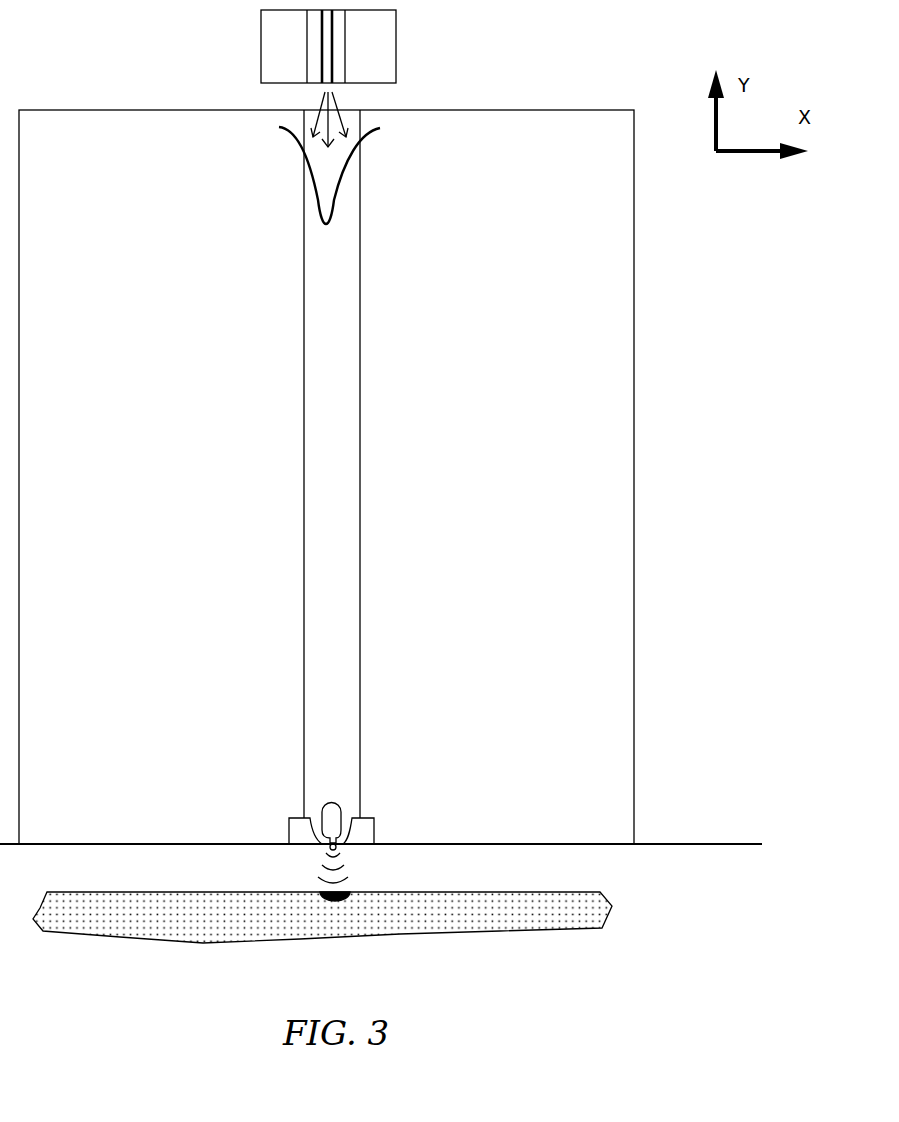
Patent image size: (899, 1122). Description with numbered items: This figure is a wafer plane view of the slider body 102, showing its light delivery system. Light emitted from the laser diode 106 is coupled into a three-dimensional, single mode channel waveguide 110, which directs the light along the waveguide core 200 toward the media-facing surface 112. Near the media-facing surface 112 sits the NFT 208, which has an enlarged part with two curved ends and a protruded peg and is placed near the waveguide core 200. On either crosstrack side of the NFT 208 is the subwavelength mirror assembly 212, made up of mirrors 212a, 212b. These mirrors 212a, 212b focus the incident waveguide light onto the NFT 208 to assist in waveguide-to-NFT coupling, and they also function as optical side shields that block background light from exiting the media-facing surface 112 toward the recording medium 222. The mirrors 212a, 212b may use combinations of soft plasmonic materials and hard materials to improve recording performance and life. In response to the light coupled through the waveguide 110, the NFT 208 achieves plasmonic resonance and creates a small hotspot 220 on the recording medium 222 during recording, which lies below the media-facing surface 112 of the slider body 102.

The slider body 102 is at (525, 110).
The laser diode 106 is at (307, 36).
The channel waveguide 110 is at (208, 296).
The media-facing surface 112 is at (713, 846).
The waveguide core 200 is at (303, 660).
The NFT 208 is at (310, 820).
The subwavelength mirror assembly 212 is at (353, 834).
The mirror 212a is at (289, 824).
The mirror 212b is at (375, 826).
The hotspot 220 is at (340, 898).
The recording medium 222 is at (566, 918).